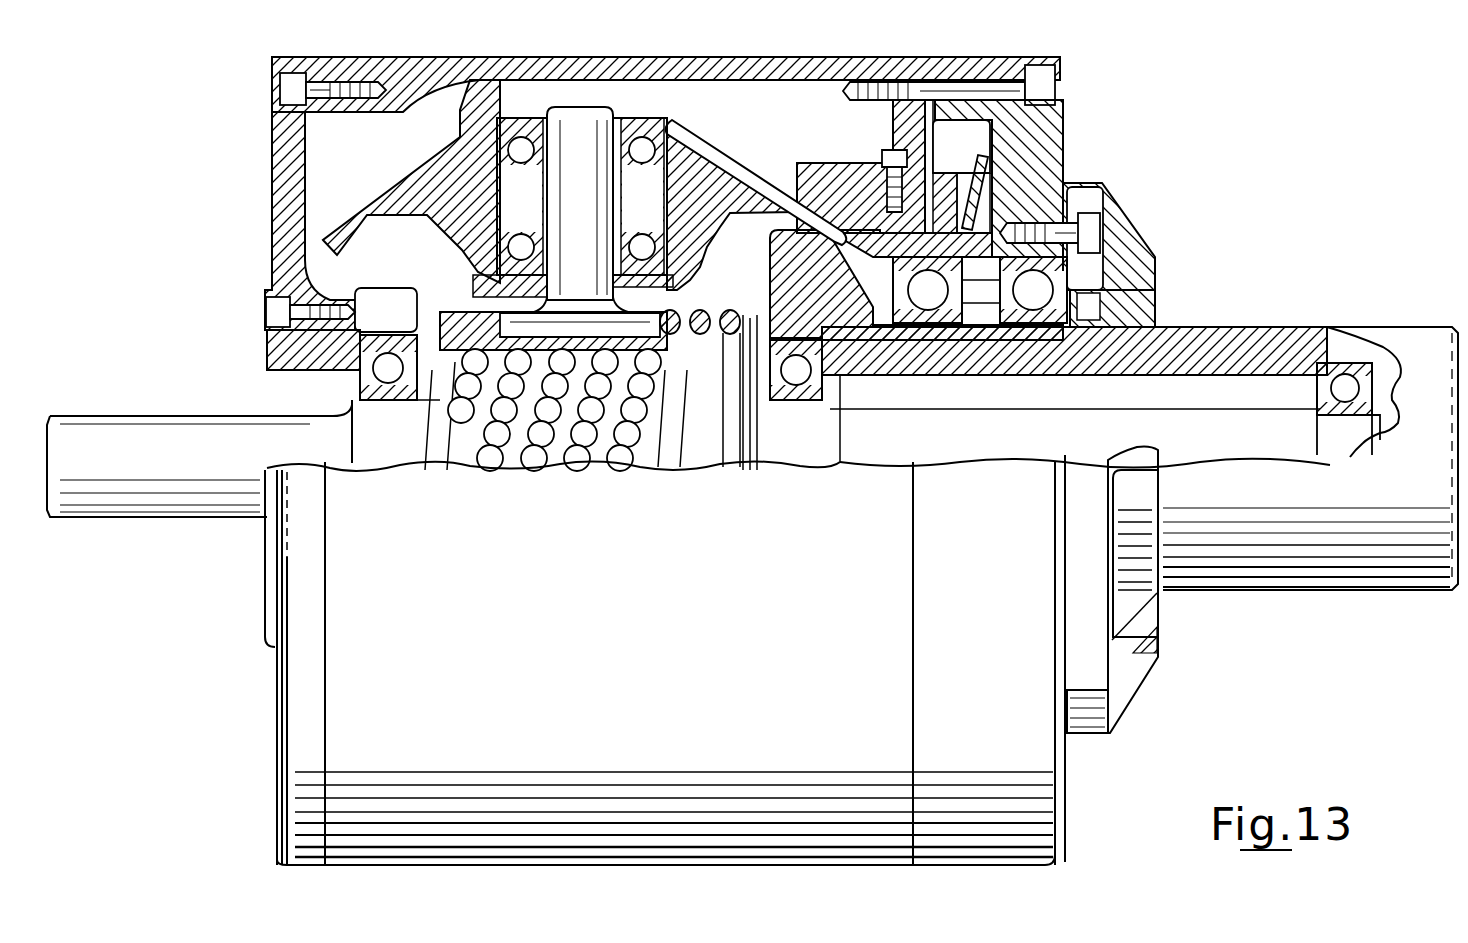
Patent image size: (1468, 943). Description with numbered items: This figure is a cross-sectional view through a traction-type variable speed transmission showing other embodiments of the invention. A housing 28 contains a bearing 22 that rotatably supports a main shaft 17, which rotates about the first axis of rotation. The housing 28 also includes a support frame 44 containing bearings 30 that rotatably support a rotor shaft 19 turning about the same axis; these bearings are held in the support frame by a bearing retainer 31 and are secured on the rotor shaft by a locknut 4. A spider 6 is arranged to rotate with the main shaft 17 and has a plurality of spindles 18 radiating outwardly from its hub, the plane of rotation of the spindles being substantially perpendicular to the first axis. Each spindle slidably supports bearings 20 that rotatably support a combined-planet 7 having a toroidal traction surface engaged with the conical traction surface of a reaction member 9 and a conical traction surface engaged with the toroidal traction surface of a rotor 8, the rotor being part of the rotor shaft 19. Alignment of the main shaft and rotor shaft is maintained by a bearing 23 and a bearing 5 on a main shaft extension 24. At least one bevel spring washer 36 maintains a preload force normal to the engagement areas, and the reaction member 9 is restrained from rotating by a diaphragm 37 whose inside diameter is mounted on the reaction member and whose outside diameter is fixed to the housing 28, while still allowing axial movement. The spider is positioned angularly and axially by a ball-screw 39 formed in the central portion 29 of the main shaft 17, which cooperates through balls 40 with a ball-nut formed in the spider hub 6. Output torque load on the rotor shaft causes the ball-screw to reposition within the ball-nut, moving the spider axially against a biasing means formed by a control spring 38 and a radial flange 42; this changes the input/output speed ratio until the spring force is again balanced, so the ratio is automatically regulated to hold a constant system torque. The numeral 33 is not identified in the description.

The locknut 4 is at (1105, 314).
The bearing 5 is at (1350, 415).
The spider 6 is at (462, 318).
The combined-planet 7 is at (455, 145).
The rotor 8 is at (815, 296).
The reaction member 9 is at (815, 172).
The main shaft 17 is at (180, 420).
The spindles 18 is at (585, 105).
The rotor shaft 19 is at (1387, 335).
The bearings 20 is at (685, 135).
The bearing 22 is at (395, 412).
The bearing 23 is at (803, 415).
The main shaft extension 24 is at (1022, 440).
The housing 28 is at (845, 57).
The main shaft central portion 29 is at (570, 450).
The bearings 30 is at (1013, 325).
The bearing retainer 31 is at (1125, 236).
The housing wall 33 is at (290, 218).
The bevel spring washer 36 is at (975, 180).
The diaphragm 37 is at (925, 130).
The control spring 38 is at (680, 313).
The ball-screw 39 is at (675, 445).
The balls 40 is at (490, 462).
The radial flange 42 is at (750, 317).
The support frame 44 is at (1063, 142).